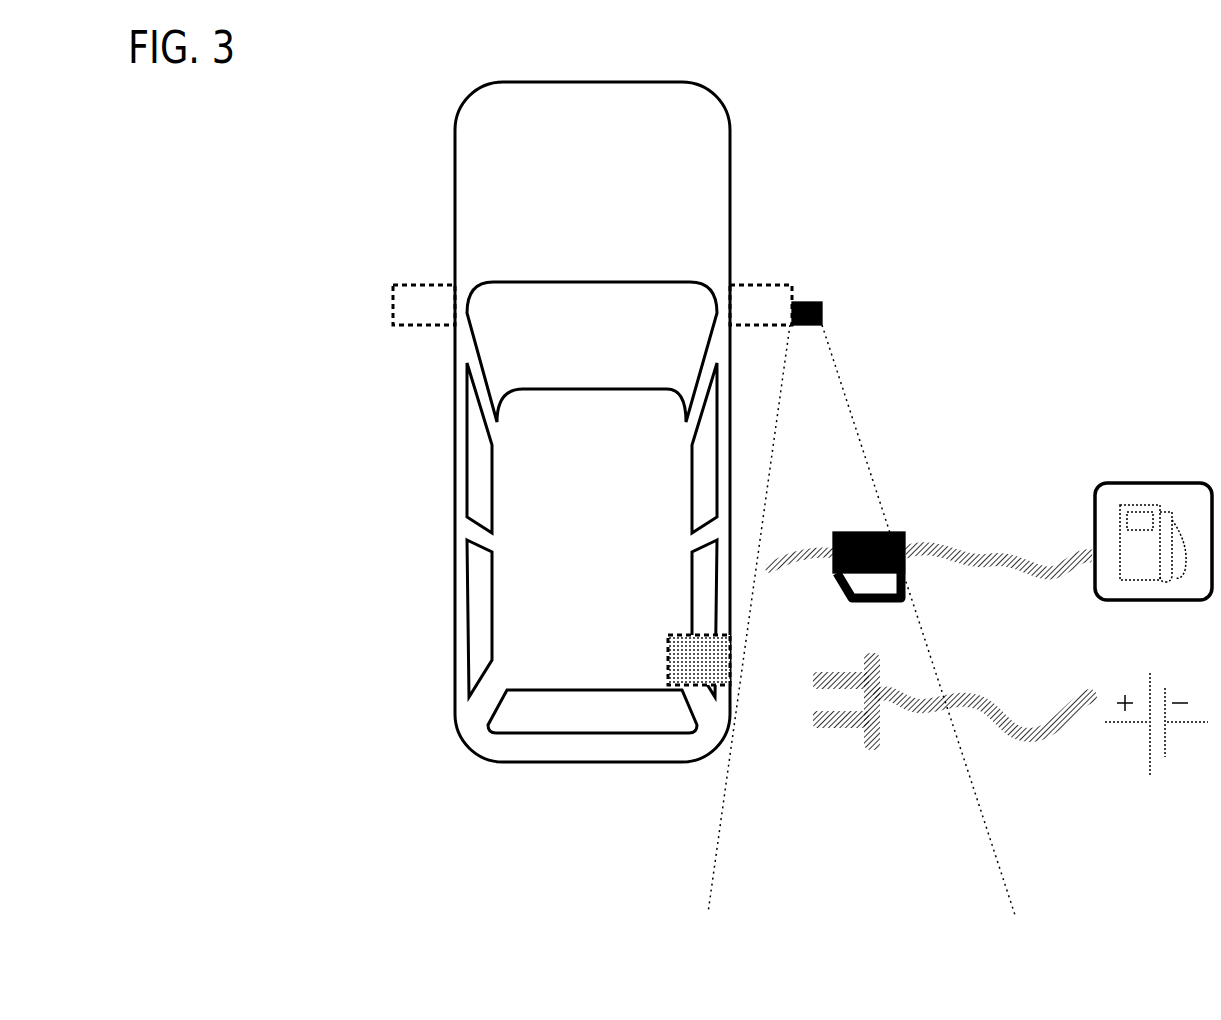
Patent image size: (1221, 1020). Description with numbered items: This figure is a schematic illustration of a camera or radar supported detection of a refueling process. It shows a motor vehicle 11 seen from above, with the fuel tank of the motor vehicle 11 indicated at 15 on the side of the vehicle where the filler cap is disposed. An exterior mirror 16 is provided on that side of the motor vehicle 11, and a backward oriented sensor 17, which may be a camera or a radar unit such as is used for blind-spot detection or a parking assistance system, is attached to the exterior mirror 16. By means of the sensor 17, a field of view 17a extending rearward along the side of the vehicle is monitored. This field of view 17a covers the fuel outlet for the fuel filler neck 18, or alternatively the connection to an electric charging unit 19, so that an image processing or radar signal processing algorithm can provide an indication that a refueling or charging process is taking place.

The motor vehicle 11 is at (600, 193).
The fuel tank 15 is at (668, 635).
The exterior mirror 16 is at (763, 283).
The sensor 17 is at (817, 300).
The field of view 17a is at (868, 914).
The fuel filler neck 18 is at (875, 530).
The electric charging unit 19 is at (1040, 737).